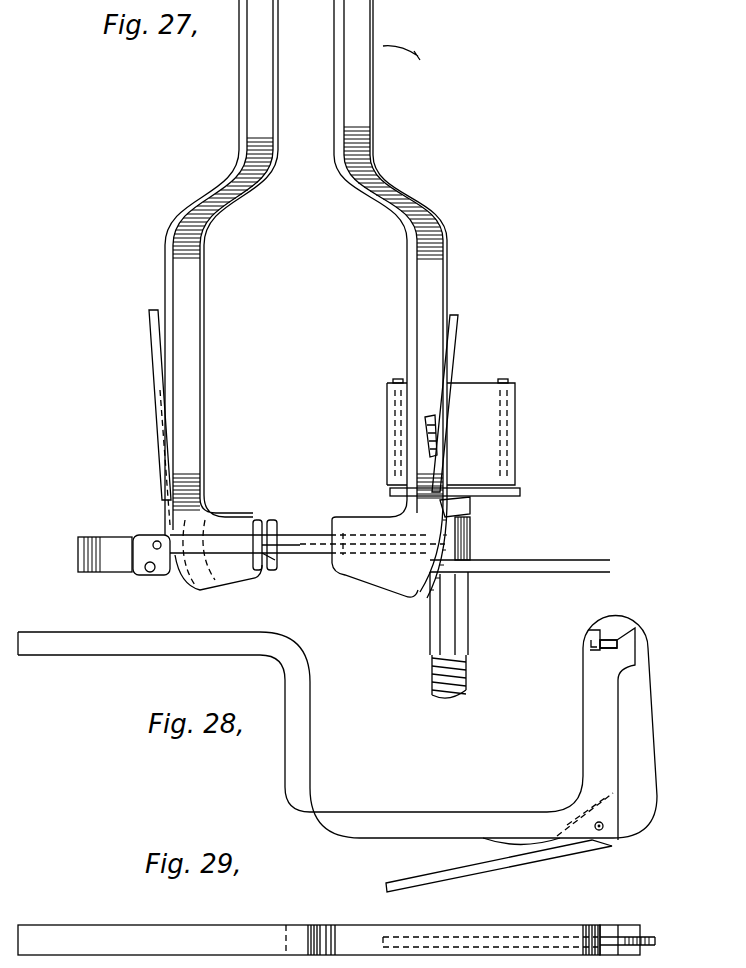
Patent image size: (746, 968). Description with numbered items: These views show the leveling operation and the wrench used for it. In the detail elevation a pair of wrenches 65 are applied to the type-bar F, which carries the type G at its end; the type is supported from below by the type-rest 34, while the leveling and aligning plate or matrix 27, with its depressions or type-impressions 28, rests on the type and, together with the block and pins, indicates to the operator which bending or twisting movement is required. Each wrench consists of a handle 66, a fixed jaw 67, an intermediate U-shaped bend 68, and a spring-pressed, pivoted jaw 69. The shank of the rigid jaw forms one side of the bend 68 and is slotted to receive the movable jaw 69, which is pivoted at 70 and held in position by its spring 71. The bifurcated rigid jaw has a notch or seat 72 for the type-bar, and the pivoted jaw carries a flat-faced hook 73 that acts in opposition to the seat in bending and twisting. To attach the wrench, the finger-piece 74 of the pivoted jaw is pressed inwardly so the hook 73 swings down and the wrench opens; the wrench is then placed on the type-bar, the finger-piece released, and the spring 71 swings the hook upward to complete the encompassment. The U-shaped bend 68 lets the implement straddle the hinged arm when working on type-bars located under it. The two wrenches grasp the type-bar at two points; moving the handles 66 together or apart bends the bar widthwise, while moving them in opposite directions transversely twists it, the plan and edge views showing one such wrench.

In FIG. 27, the handle 66 is at (240, 120).
In FIG. 28, the handle 66 is at (112, 652).
In FIG. 29, the handle 66 is at (309, 940).
In FIG. 27, the wrenches 65 is at (306, 430).
In FIG. 27, the finger-piece 74 is at (150, 378).
In FIG. 28, the finger-piece 74 is at (476, 872).
In FIG. 27, the depressions or type-impressions 28 is at (456, 423).
In FIG. 27, the leveling and aligning plate or matrix 27 is at (508, 493).
In FIG. 27, the type G is at (466, 508).
In FIG. 27, the type-rest 34 is at (470, 536).
In FIG. 27, the type-bar or lever F is at (305, 536).
In FIG. 27, the fixed jaw 67 is at (260, 519).
In FIG. 28, the fixed jaw 67 is at (587, 652).
In FIG. 27, the flat-faced hook 73 is at (273, 549).
In FIG. 28, the flat-faced hook 73 is at (603, 652).
In FIG. 28, the intermediate U-shaped bend 68 is at (449, 789).
In FIG. 28, the spring-pressed pivoted jaw 69 is at (611, 728).
In FIG. 29, the spring-pressed pivoted jaw 69 is at (656, 942).
In FIG. 28, the notch or seat 72 is at (604, 663).
In FIG. 28, the pivot 70 is at (603, 831).
In FIG. 29, the pivot 70 is at (597, 925).
In FIG. 28, the spring 71 is at (487, 843).